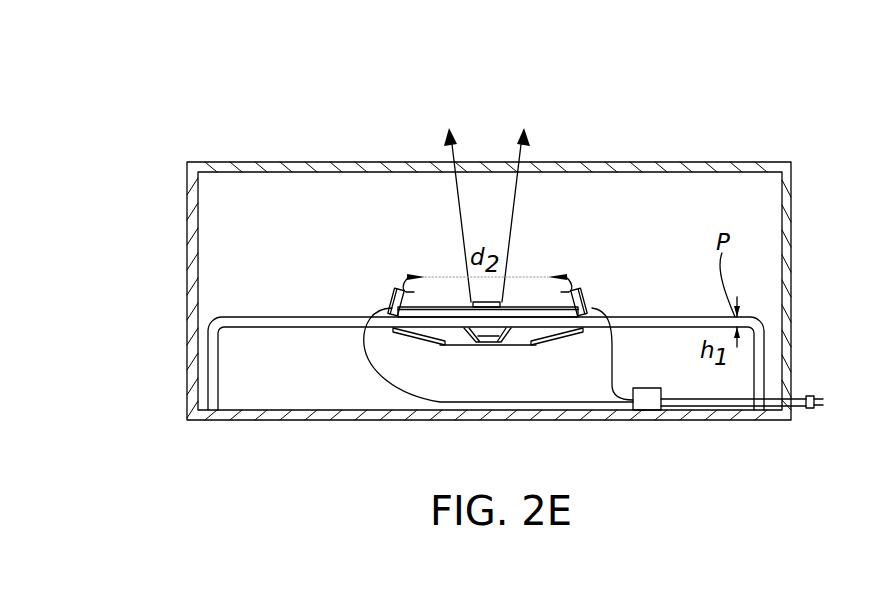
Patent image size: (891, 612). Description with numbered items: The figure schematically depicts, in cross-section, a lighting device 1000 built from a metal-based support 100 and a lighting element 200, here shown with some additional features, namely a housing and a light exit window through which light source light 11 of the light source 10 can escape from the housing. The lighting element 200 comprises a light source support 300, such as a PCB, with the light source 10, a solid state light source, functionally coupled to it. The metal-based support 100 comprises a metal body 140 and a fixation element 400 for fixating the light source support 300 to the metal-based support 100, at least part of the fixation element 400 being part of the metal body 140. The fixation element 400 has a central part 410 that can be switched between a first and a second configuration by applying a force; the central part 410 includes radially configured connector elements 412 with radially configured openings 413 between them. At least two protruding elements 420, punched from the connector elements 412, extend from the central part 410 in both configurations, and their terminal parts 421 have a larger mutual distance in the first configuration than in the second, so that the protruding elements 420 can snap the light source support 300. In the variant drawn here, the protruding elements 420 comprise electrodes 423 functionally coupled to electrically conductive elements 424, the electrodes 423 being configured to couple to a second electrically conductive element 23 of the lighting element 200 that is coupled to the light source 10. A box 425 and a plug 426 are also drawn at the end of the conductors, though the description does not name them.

The lighting device 1000 is at (678, 106).
The metal-based support 100 is at (198, 402).
The metal body 140 is at (258, 328).
The light source light 11 is at (452, 151).
The light source 10 is at (425, 309).
The second electrically conductive element 23 is at (443, 306).
The lighting element 200 is at (542, 296).
The light source support 300 is at (428, 306).
The fixation element 400 is at (490, 388).
The central part 410 is at (492, 343).
The connector elements 412 is at (460, 344).
The radially configured openings 413 is at (478, 343).
The protruding elements 420 is at (364, 299).
The terminal parts 421 is at (392, 289).
The electrodes 423 is at (409, 276).
The electrically conductive elements 424 is at (372, 358).
The connector box 425 is at (662, 430).
The plug 426 is at (819, 424).